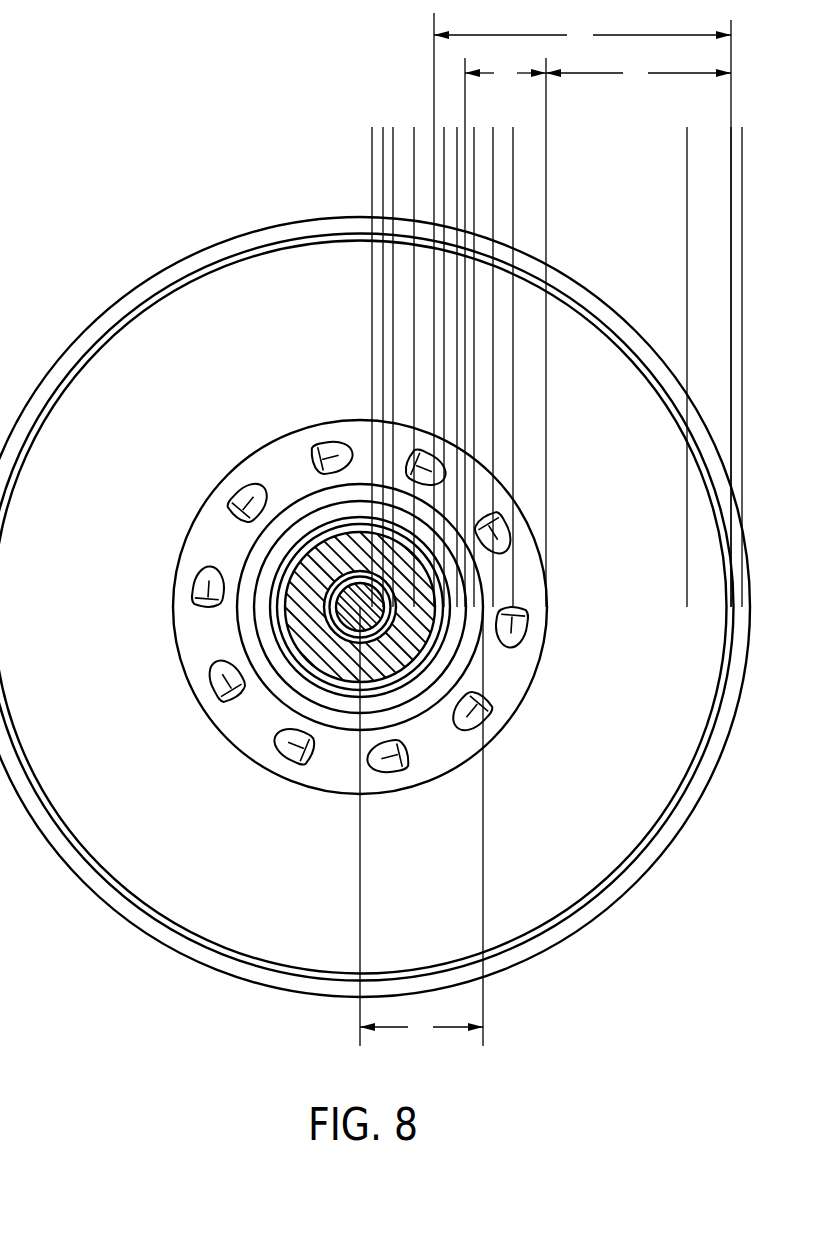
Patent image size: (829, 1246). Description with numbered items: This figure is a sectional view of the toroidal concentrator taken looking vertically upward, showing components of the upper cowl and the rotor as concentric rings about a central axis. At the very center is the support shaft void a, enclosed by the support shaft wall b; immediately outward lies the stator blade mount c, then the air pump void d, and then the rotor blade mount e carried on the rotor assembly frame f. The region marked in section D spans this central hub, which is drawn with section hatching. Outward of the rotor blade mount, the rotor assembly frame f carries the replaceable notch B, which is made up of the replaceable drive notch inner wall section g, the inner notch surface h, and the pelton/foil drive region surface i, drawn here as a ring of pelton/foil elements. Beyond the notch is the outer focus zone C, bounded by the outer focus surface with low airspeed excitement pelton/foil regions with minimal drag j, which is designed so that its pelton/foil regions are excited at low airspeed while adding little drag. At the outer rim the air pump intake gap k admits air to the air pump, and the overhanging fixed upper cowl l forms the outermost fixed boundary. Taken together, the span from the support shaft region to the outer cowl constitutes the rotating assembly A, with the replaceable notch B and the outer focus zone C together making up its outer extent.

The support shaft void a is at (371, 351).
The support shaft wall b is at (383, 351).
The stator blade mount c is at (395, 351).
The air pump void d is at (413, 351).
The rotor blade mount e is at (444, 351).
The rotor assembly frame f is at (456, 351).
The replaceable drive notch inner wall section g is at (473, 351).
The inner notch surface h is at (492, 351).
The pelton/foil drive region surface i is at (513, 351).
The outer focus surface with low airspeed excitement pelton/foil regions with minima j is at (687, 351).
The air pump intake gap k is at (729, 351).
The overhanging fixed upper cowl l is at (742, 351).
The rotating assembly A is at (582, 310).
The replaceable notch B is at (505, 332).
The outer focus zone C is at (638, 73).
The in section D is at (421, 826).